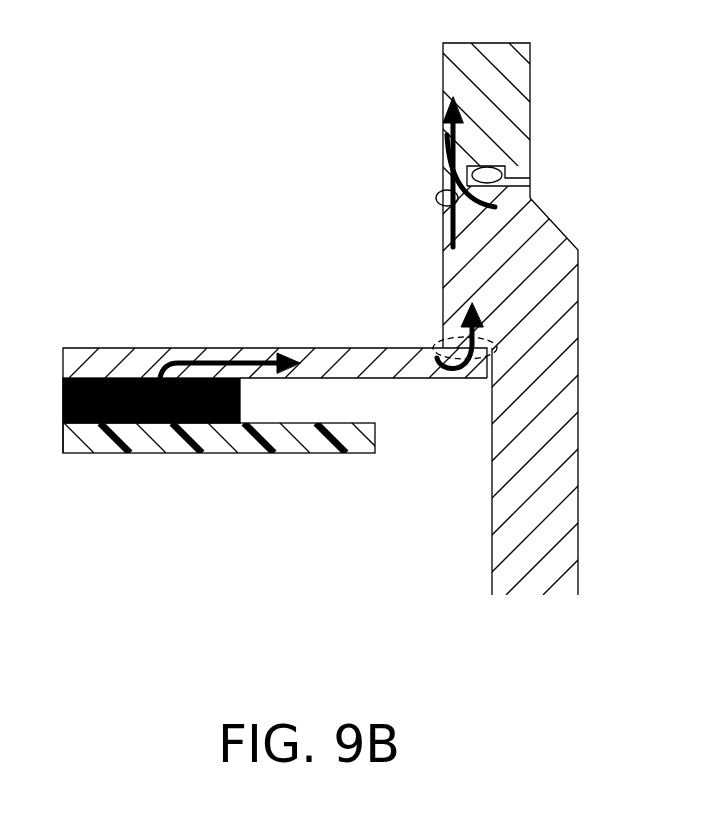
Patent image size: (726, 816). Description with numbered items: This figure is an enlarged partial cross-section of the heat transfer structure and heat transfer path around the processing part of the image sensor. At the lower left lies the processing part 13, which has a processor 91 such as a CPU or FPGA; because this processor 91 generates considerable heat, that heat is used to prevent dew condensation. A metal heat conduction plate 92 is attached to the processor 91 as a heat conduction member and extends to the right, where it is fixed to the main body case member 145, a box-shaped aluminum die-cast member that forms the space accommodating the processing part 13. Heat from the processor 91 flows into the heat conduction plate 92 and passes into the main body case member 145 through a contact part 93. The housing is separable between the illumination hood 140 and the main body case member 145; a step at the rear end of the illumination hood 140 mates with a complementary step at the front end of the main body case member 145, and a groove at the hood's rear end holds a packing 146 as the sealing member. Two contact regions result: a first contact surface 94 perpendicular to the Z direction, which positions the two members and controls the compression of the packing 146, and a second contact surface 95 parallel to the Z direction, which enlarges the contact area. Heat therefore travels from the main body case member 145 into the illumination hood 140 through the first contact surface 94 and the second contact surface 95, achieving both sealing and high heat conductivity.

The illumination hood 140 is at (527, 71).
The main body case member 145 is at (568, 402).
The packing 146 is at (530, 148).
The second contact surface 95 is at (505, 200).
The first contact surface 94 is at (437, 203).
The contact part 93 is at (432, 344).
The heat conduction plate 92 is at (129, 348).
The processor 91 is at (241, 402).
The processing part 13 is at (177, 453).